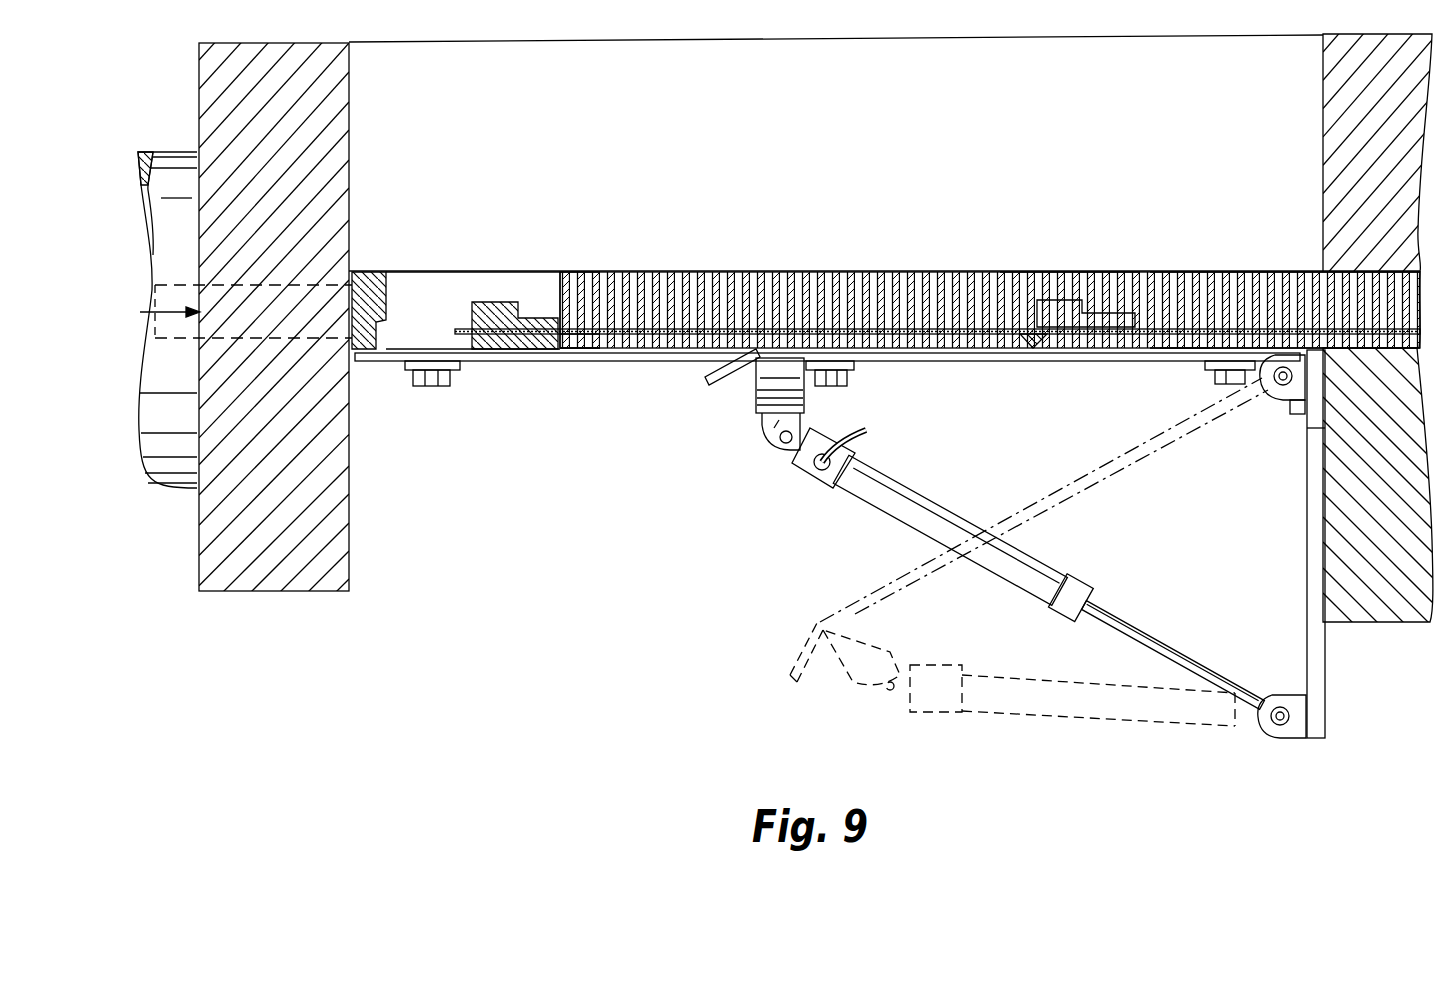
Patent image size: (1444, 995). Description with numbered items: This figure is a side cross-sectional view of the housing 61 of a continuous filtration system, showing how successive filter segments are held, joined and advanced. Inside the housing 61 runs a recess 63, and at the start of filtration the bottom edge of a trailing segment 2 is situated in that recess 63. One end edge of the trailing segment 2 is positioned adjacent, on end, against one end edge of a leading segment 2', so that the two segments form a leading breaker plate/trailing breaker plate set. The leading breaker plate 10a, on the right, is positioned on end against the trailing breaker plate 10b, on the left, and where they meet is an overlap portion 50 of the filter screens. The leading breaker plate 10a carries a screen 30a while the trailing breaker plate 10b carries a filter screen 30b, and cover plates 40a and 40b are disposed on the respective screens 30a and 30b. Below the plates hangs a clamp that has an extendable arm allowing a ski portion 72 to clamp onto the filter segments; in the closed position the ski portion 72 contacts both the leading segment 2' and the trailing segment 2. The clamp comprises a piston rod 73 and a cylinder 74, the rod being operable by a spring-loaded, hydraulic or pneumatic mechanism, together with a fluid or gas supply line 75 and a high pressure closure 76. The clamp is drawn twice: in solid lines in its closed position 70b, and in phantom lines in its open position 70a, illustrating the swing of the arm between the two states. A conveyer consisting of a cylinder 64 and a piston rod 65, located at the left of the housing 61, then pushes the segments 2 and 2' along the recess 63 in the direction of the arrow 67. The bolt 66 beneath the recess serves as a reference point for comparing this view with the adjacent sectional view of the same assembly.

The housing 61 is at (199, 80).
The cylinder 64 is at (189, 490).
The arrow 67 is at (157, 298).
The piston rod 65 is at (350, 270).
The recess 63 is at (452, 291).
The bolt 66 is at (436, 387).
The filter screen 30b is at (528, 349).
The cover plate 40b is at (577, 350).
The segment 2 is at (990, 271).
The trailing breaker plate 10b is at (574, 262).
The overlap portion 50 is at (1077, 258).
The leading breaker plate 10a is at (1171, 260).
The leading segment 2' is at (1307, 269).
The screen 30a is at (1128, 348).
The cover plate 40a is at (1182, 360).
The ski portion 72 is at (722, 382).
The closed position 70b is at (993, 568).
The high pressure closure 76 is at (810, 474).
The fluid or gas supply line 75 is at (864, 436).
The cylinder 74 is at (913, 528).
The piston rod 73 is at (1112, 640).
The open position 70a is at (1036, 718).